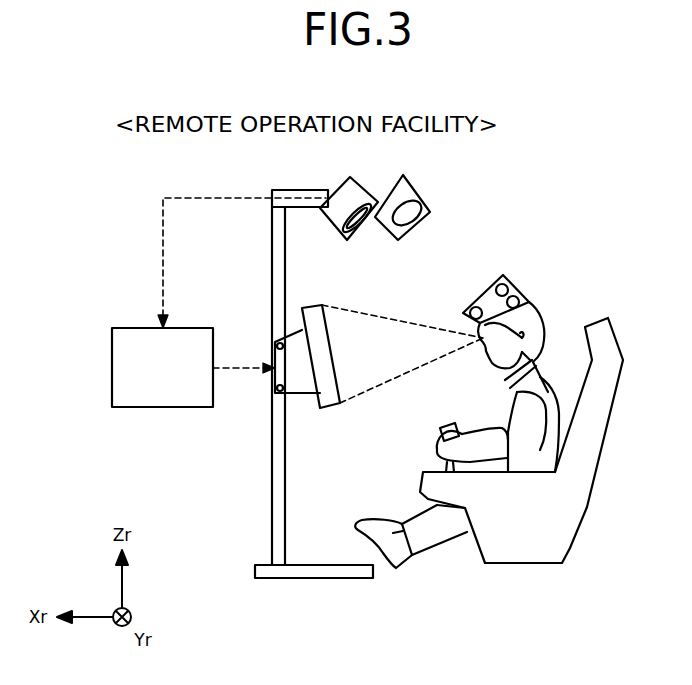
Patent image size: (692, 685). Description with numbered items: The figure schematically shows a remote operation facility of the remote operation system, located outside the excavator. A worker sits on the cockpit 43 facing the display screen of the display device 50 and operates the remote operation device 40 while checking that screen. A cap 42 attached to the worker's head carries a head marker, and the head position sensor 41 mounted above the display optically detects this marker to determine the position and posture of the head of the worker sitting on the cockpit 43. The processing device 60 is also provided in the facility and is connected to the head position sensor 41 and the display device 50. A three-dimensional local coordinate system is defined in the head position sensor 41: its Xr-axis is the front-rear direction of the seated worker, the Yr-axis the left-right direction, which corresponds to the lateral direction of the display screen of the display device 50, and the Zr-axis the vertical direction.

The remote operation device 40 is at (442, 465).
The head position sensor 41 is at (428, 203).
The cap 42 is at (519, 290).
The cockpit 43 is at (605, 433).
The display device 50 is at (322, 330).
The processing device 60 is at (125, 328).